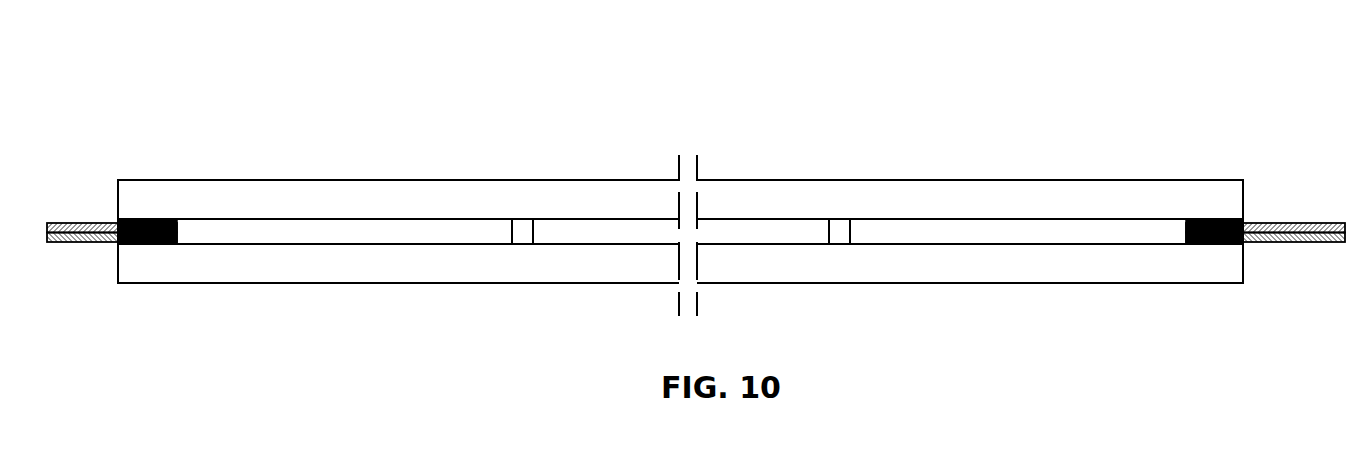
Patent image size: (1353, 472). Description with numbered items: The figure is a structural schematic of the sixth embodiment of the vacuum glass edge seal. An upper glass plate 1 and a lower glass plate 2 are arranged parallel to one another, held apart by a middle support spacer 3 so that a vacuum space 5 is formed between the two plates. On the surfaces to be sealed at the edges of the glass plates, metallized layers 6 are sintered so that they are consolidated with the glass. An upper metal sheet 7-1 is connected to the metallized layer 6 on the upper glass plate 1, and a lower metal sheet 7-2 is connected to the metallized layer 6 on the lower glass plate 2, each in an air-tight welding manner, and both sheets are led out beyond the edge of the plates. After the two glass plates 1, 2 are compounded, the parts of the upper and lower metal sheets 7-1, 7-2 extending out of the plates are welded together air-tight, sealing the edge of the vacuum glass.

The upper glass plate 1 is at (193, 202).
The lower glass plate 2 is at (340, 275).
The middle support spacer 3 is at (523, 230).
The vacuum space between two glass plates 5 is at (960, 235).
The metallized layers sintered on the surfaces of the glass plates 6 is at (1205, 222).
The upper metal sheet 7-1 is at (1287, 222).
The lower metal sheet 7-2 is at (1270, 244).